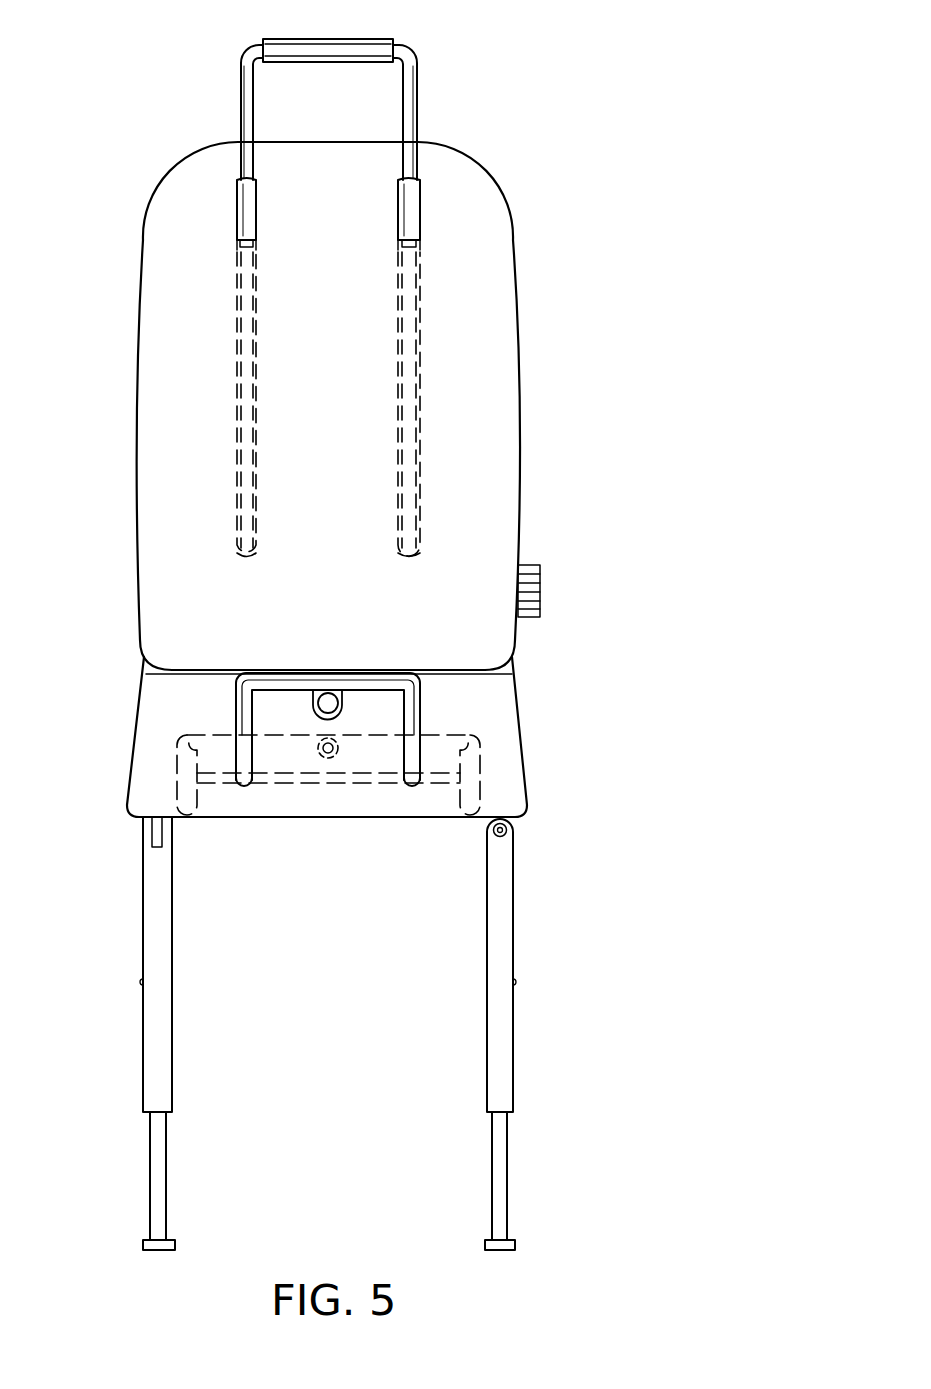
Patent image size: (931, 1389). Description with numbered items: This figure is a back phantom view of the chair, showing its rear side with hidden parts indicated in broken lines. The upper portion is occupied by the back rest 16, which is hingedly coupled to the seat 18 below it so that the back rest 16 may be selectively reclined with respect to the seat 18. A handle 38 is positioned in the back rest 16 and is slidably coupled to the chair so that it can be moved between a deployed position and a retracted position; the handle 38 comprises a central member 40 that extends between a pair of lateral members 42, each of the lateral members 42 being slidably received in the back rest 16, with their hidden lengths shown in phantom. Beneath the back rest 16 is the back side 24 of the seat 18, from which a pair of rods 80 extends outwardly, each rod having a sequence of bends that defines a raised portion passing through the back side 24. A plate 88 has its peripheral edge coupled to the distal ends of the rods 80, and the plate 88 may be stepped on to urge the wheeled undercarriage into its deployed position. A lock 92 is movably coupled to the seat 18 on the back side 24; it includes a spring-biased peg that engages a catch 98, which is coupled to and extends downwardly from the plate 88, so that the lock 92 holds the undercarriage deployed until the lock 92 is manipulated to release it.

The back rest 16 is at (522, 407).
The seat 18 is at (527, 732).
The back side 24 is at (150, 747).
The handle 38 is at (410, 52).
The central member 40 is at (313, 41).
The lateral members 42 is at (240, 97).
The rods 80 is at (253, 752).
The plate 88 is at (422, 676).
The lock 92 is at (328, 768).
The catch 98 is at (317, 700).